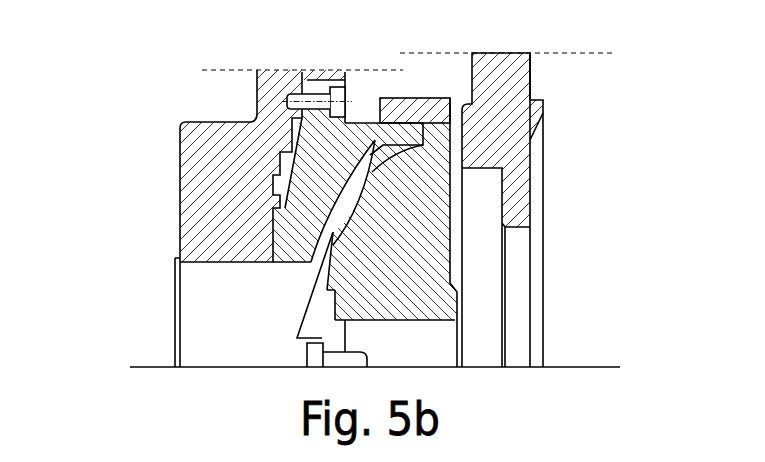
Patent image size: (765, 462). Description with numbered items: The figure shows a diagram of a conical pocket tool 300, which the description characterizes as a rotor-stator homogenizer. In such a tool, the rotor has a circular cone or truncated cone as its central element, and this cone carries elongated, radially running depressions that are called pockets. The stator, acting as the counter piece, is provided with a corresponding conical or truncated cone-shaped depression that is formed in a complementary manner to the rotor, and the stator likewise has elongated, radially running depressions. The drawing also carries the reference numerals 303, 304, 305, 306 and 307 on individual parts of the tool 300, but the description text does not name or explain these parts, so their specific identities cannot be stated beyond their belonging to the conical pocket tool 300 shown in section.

The conical pocket tool 300 is at (438, 70).
The spring element 303 is at (340, 244).
The ring element 304 is at (337, 241).
The screw 305 is at (380, 98).
The retaining element 306 is at (425, 130).
The housing part 307 is at (410, 162).